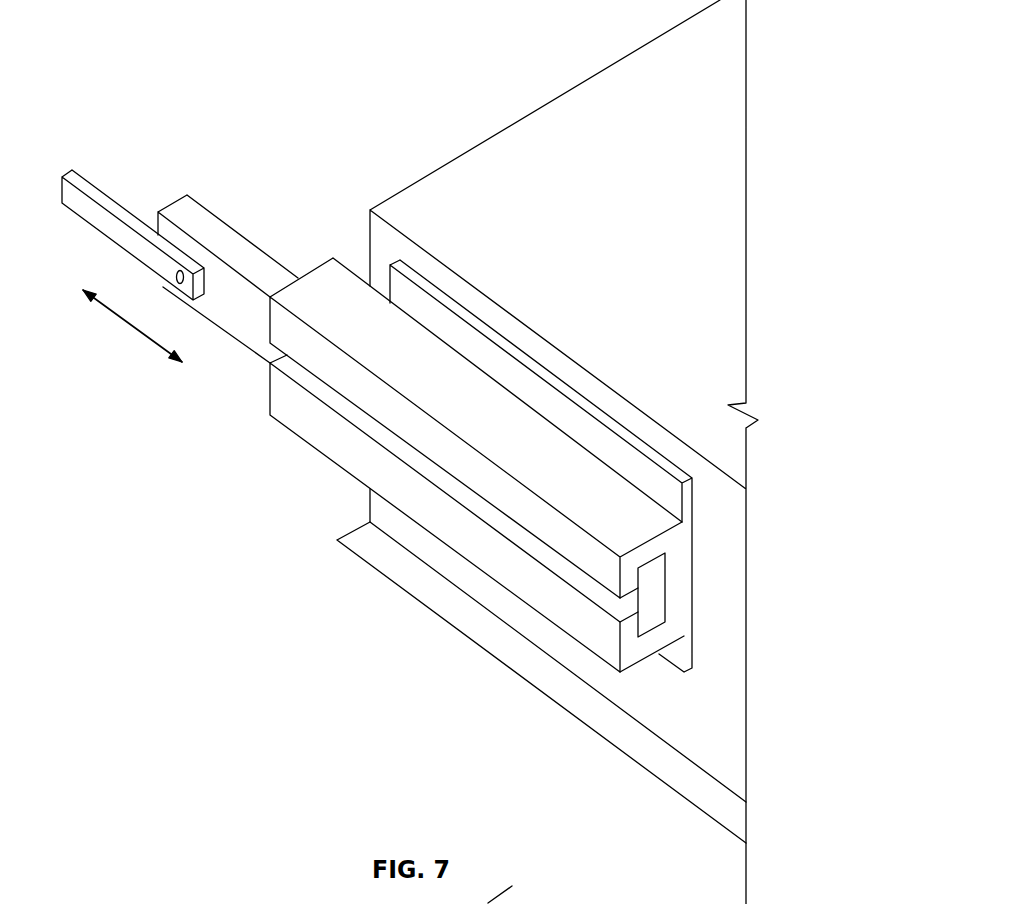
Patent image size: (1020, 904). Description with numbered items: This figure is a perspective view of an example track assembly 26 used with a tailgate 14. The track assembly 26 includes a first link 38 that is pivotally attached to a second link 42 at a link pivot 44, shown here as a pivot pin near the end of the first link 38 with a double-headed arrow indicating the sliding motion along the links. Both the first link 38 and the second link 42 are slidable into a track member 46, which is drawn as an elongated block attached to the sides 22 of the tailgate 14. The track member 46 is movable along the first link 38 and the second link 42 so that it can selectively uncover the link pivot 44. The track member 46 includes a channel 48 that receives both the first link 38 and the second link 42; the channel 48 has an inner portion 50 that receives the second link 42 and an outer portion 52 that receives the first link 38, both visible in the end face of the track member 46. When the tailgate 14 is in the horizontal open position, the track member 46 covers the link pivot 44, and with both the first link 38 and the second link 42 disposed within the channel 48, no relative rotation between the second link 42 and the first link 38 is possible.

The tailgate 14 is at (537, 178).
The sides 22 is at (714, 551).
The track assembly 26 is at (158, 440).
The first link 38 is at (72, 176).
The second link 42 is at (203, 217).
The link pivot 44 is at (170, 280).
The track member 46 is at (465, 538).
The channel 48 is at (638, 644).
The inner portion 50 is at (660, 572).
The outer portion 52 is at (617, 603).